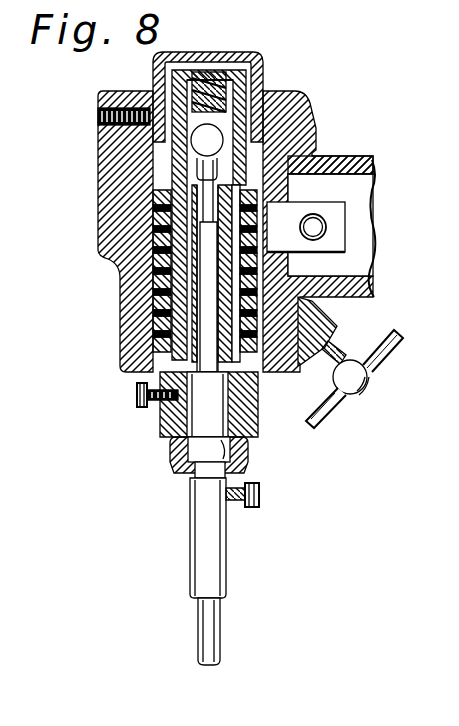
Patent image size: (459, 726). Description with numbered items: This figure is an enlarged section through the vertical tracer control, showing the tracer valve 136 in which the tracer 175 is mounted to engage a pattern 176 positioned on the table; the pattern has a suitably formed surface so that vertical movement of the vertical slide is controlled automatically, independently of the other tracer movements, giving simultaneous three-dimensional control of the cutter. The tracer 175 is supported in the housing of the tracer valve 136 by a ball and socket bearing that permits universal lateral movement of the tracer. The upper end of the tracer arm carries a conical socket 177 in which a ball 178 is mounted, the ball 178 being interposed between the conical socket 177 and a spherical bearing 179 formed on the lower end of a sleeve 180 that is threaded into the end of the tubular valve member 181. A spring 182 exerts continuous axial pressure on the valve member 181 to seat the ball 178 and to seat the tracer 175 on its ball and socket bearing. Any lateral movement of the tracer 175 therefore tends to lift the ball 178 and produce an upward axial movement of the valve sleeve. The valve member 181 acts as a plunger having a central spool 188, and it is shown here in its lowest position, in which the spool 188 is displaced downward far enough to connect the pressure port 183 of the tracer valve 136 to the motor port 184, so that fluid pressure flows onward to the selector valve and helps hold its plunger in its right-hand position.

The tracer valve 136 is at (124, 311).
The tracer 175 is at (210, 633).
The pattern 176 is at (190, 447).
The conical socket 177 is at (312, 128).
The ball 178 is at (297, 107).
The spherical bearing 179 is at (256, 93).
The sleeve 180 is at (228, 82).
The tubular valve member 181 is at (292, 158).
The spring 182 is at (207, 66).
The pressure port 183 is at (170, 243).
The motor port 184 is at (158, 205).
The central spool 188 is at (160, 262).